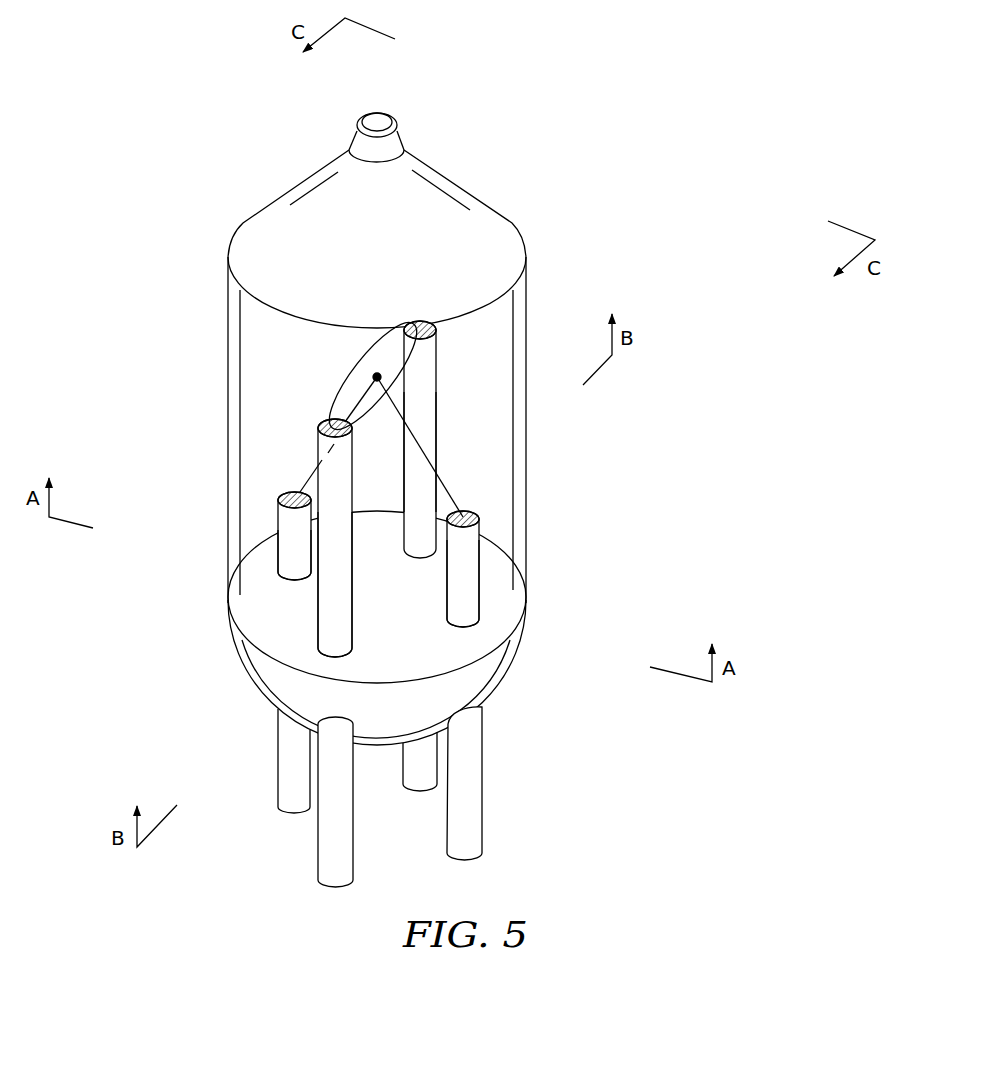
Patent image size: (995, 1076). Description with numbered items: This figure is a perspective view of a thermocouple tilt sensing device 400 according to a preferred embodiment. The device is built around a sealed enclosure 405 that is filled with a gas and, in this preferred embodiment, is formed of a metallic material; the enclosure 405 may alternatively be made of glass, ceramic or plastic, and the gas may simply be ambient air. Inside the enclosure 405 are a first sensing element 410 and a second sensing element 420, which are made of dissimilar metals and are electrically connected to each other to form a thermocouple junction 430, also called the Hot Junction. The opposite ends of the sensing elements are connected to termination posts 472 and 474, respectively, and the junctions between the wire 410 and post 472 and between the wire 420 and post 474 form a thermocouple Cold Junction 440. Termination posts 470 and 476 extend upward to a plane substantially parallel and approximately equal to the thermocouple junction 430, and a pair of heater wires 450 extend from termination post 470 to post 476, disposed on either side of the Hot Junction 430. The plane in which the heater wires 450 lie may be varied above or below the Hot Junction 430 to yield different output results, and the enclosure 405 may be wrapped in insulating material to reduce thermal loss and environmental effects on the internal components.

The thermocouple tilt sensing device 400 is at (393, 500).
The sealed enclosure 405 is at (528, 456).
The first sensing element 410 is at (301, 538).
The second sensing element 420 is at (497, 439).
The thermocouple junction 430 is at (375, 377).
The thermocouple Cold Junction 440 is at (380, 559).
The heater wires 450 is at (358, 350).
The termination post 470 is at (340, 622).
The termination post 472 is at (287, 553).
The termination post 474 is at (473, 577).
The termination post 476 is at (427, 392).